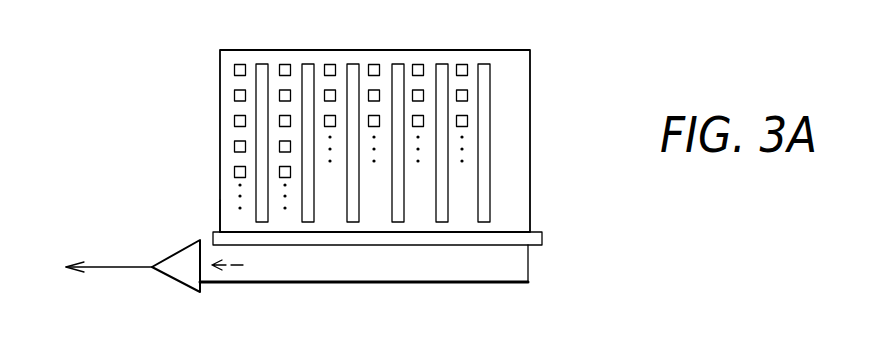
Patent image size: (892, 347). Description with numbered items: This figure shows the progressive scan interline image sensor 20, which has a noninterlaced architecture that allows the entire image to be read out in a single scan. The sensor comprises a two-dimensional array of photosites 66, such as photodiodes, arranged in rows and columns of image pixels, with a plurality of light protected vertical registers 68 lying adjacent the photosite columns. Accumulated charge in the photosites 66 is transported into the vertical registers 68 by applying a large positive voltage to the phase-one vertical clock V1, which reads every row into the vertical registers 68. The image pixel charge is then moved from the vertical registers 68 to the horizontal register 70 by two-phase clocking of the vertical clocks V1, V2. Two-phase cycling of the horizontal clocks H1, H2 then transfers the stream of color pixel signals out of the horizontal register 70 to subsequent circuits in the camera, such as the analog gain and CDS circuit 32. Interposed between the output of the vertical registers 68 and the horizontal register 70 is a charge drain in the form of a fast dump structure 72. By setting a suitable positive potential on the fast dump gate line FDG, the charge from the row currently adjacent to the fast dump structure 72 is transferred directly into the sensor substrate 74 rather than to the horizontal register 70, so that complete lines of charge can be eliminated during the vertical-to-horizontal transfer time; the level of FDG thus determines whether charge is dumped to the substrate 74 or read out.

The image sensor 20 is at (530, 96).
The analog gain and CDS circuit 32 is at (89, 268).
The photosites 66 is at (240, 64).
The vertical registers 68 is at (264, 64).
The horizontal register 70 is at (492, 282).
The fast dump structure 72 is at (214, 239).
The sensor substrate 74 is at (230, 221).
The phase-one vertical clock V1 is at (220, 98).
The phase-two vertical clock V2 is at (220, 149).
The phase-one horizontal clock H1 is at (380, 282).
The phase-two horizontal clock H2 is at (445, 282).
The fast dump gate line FDG is at (542, 240).